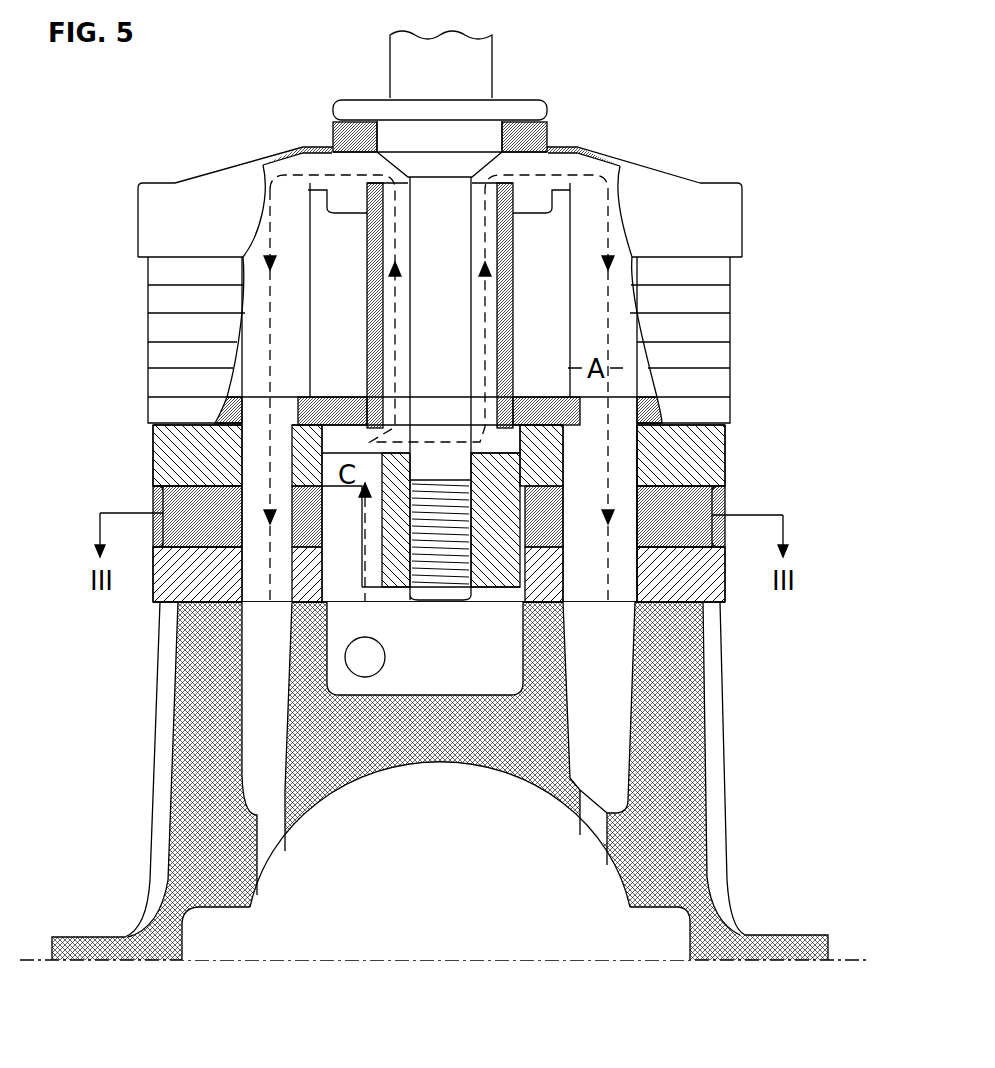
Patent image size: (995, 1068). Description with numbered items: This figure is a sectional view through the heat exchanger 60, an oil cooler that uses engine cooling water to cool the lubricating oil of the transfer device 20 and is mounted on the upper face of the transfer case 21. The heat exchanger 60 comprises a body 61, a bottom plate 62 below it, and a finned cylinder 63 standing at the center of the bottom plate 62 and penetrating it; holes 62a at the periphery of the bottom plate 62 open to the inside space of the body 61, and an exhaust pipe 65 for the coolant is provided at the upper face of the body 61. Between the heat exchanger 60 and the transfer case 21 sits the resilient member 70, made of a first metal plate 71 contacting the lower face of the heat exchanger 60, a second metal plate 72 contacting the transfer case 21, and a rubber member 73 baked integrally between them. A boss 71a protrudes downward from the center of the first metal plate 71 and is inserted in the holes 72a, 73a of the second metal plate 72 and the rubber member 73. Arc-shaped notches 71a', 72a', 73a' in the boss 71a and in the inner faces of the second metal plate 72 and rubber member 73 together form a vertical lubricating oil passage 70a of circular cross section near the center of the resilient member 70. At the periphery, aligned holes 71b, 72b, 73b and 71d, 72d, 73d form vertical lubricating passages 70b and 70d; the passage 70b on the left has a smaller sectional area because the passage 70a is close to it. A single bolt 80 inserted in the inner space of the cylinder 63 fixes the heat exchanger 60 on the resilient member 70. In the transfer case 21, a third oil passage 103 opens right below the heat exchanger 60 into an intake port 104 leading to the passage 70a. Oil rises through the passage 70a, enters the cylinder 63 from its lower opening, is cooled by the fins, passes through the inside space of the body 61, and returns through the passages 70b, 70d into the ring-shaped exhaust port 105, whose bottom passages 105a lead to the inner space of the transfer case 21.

The transfer device 20 is at (797, 792).
The transfer case 21 is at (727, 855).
The heat exchanger 60 is at (676, 168).
The body 61 is at (732, 212).
The bottom plate 62 is at (722, 408).
The hole 62a is at (638, 408).
The cylinder 63 is at (363, 185).
The exhaust pipe 65 is at (482, 55).
The resilient member 70 is at (138, 447).
The lubricating oil passage 70a is at (342, 570).
The lubricating passage 70b is at (258, 433).
The lubricating passage 70d is at (618, 508).
The first metal plate 71 is at (727, 455).
The boss 71a is at (427, 531).
The notch 71a' is at (415, 403).
The hole 71b is at (242, 448).
The hole 71d is at (638, 470).
The second metal plate 72 is at (150, 598).
The hole 72a is at (663, 646).
The notch 72a' is at (206, 642).
The hole 72b is at (242, 585).
The hole 72d is at (640, 580).
The rubber member 73 is at (162, 503).
The hole 73a is at (663, 589).
The notch 73a' is at (206, 584).
The hole 73b is at (240, 535).
The hole 73d is at (638, 523).
The bolt 80 is at (490, 128).
The third oil passage 103 is at (385, 657).
The intake port 104 is at (510, 651).
The exhaust port 105 is at (242, 785).
The passage 105a is at (602, 857).